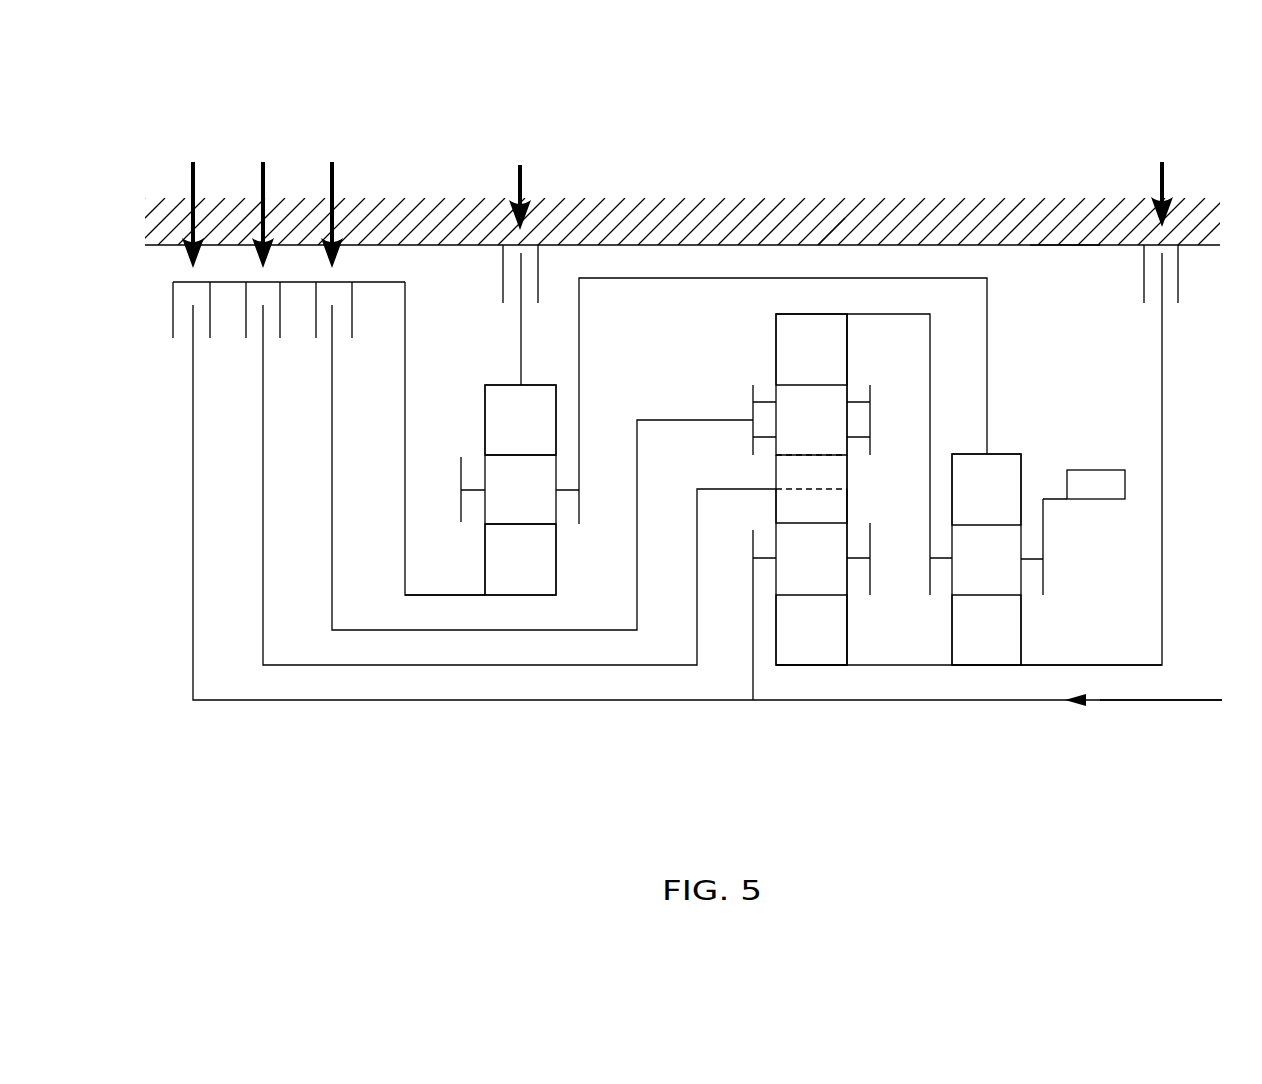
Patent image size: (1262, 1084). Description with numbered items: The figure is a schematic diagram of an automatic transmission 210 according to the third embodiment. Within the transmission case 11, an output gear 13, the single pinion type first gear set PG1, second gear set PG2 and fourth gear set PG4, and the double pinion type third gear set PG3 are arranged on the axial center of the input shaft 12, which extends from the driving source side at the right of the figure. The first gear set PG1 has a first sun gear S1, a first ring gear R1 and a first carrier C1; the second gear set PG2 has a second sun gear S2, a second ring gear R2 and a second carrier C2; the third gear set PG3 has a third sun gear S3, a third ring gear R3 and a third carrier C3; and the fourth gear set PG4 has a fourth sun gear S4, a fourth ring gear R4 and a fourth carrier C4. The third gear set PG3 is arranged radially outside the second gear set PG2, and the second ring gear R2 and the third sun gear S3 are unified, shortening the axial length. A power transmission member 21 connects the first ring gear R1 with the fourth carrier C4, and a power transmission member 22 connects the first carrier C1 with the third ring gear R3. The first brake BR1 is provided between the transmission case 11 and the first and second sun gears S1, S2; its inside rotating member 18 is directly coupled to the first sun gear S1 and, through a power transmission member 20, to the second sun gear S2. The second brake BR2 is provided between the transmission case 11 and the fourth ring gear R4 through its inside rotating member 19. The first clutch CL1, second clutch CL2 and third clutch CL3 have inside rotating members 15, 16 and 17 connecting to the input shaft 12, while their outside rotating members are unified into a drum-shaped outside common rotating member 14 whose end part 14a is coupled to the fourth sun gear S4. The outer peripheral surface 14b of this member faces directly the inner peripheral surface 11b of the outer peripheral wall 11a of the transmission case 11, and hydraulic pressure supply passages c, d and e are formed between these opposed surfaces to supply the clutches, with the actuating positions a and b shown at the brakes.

The automatic transmission 210 is at (1079, 143).
The transmission case 11 is at (940, 193).
The outer peripheral wall 11a is at (832, 205).
The inner peripheral surface 11b is at (1043, 247).
The input shaft 12 is at (1186, 698).
The output gear 13 is at (1093, 470).
The outside common rotating member 14 is at (405, 402).
The end part 14a is at (438, 597).
The outer peripheral surface 14b is at (382, 282).
The inside rotating member 15 is at (582, 632).
The inside rotating member 16 is at (537, 667).
The inside rotating member 17 is at (488, 703).
The inside rotating member 18 is at (1163, 535).
The inside rotating member 19 is at (523, 337).
The power transmission member 20 is at (900, 667).
The power transmission member 21 is at (733, 278).
The power transmission member 22 is at (900, 318).
The first brake BR1 is at (1142, 293).
The second brake BR2 is at (540, 263).
The first clutch CL1 is at (352, 330).
The second clutch CL2 is at (280, 330).
The third clutch CL3 is at (210, 330).
The first gear set PG1 is at (1007, 452).
The second gear set PG2 is at (850, 507).
The third gear set PG3 is at (775, 333).
The fourth gear set PG4 is at (514, 384).
The first ring gear R1 is at (986, 489).
The first sun gear S1 is at (986, 630).
The first carrier C1 is at (1044, 564).
The second ring gear R2 is at (811, 506).
The second sun gear S2 is at (811, 630).
The second carrier C2 is at (820, 611).
The third ring gear R3 is at (811, 349).
The third sun gear S3 is at (811, 472).
The third carrier C3 is at (802, 404).
The fourth ring gear R4 is at (520, 420).
The fourth sun gear S4 is at (520, 559).
The fourth carrier C4 is at (510, 509).
The hydraulic actuator a is at (1162, 180).
The hydraulic actuator b is at (520, 181).
The hydraulic pressure supply passage c is at (332, 202).
The hydraulic pressure supply passage d is at (263, 202).
The hydraulic pressure supply passage e is at (193, 202).